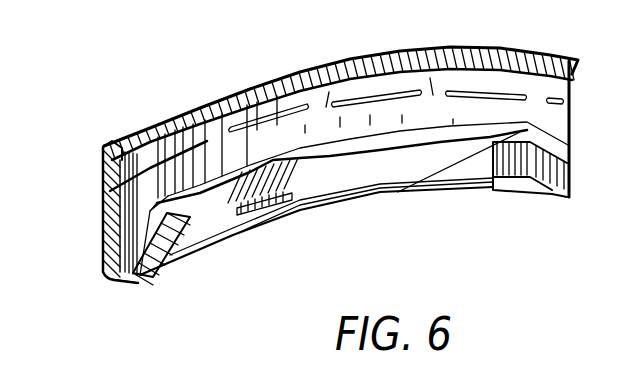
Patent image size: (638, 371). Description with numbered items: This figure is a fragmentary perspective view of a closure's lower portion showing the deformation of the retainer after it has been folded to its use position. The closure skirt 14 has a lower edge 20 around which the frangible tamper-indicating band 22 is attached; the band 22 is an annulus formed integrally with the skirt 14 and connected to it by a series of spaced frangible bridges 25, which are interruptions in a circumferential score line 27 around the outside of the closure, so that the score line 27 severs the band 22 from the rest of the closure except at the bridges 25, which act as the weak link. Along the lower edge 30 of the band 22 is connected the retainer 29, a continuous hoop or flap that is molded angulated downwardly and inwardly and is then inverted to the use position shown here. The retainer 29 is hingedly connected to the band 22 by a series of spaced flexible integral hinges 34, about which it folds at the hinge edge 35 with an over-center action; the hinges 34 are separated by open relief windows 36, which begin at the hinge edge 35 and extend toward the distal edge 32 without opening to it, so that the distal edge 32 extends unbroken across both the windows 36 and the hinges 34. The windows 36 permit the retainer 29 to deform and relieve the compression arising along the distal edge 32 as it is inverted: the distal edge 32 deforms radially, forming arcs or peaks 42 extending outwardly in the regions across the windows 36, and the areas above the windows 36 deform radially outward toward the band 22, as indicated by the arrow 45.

The skirt 14 is at (105, 146).
The lower edge of closure skirt 20 is at (100, 167).
The tamper-indicating band 22 is at (181, 243).
The frangible bridges 25 is at (394, 58).
The score line 27 is at (100, 173).
The retainer 29 is at (207, 227).
The lower edge of band 30 is at (110, 255).
The distal edge 32 is at (368, 178).
The hinges 34 is at (127, 283).
The hinge edge 35 is at (448, 192).
The windows 36 is at (273, 212).
The peaks 42 is at (320, 158).
The arrow 45 is at (259, 136).